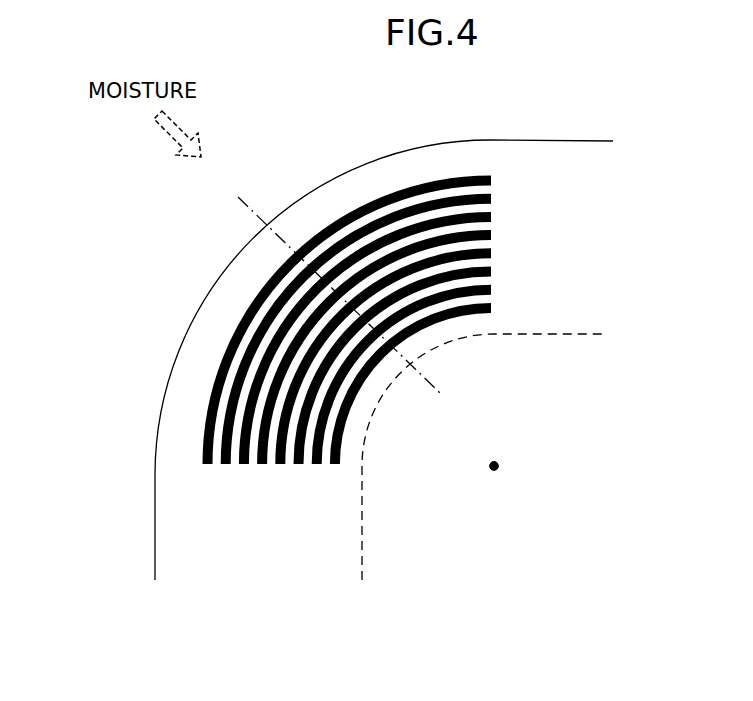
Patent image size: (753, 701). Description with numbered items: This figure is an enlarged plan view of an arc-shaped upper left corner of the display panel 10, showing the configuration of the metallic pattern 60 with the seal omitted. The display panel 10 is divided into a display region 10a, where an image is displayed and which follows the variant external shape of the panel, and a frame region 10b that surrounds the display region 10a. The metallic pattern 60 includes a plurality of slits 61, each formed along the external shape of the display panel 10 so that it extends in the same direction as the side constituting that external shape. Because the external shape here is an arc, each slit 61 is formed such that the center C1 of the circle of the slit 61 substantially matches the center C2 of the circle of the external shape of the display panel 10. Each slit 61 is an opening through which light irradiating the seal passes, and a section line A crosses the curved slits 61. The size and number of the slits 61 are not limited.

The display panel 10 is at (517, 141).
The display region 10a is at (583, 333).
The frame region 10b is at (605, 223).
The metallic pattern 60 is at (386, 278).
The slit 61 is at (490, 188).
The section line A- A is at (243, 205).
The center of a circle of slit C1 is at (505, 466).
The center of a circle of the external shape C2 is at (494, 466).